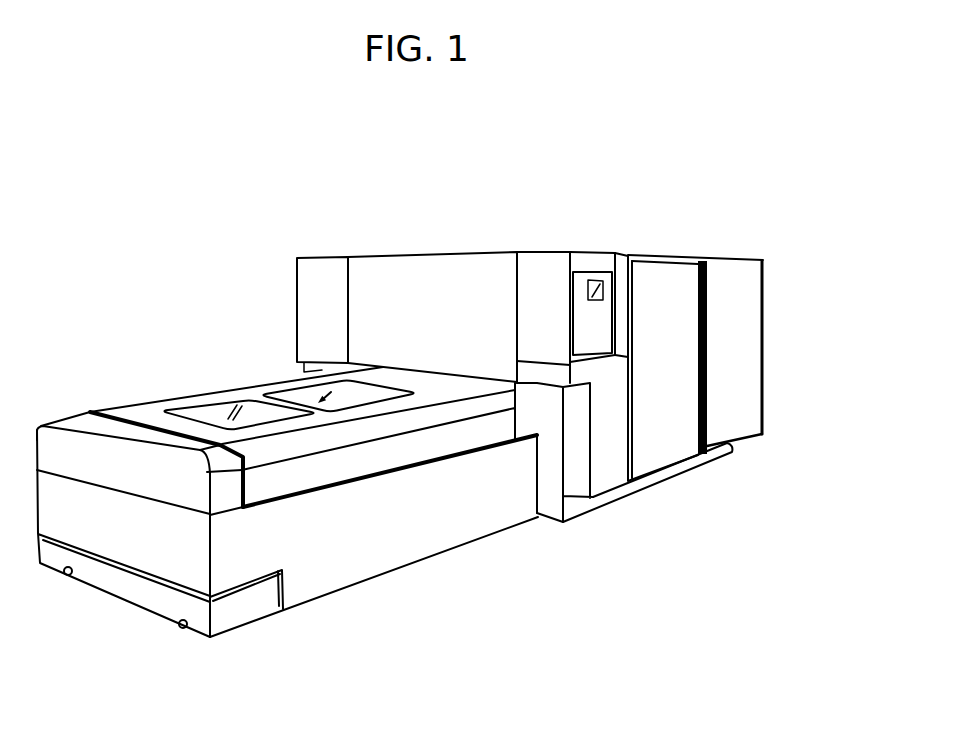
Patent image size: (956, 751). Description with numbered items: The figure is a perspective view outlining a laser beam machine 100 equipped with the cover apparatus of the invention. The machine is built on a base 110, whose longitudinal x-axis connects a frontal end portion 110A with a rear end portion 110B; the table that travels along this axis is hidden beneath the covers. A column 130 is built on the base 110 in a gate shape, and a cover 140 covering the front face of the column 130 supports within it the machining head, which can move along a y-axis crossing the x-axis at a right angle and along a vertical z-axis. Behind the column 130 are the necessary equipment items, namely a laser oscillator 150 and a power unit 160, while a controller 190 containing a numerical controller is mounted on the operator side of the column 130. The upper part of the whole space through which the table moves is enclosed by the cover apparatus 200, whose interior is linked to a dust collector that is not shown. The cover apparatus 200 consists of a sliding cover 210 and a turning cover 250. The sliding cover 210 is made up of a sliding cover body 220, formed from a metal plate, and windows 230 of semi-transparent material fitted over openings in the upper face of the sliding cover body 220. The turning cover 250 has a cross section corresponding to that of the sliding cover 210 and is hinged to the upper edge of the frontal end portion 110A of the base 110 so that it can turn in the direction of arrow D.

The laser beam machine 100 is at (750, 212).
The base 110 is at (420, 545).
The frontal end portion 110A is at (160, 562).
The rear end portion 110B is at (776, 354).
The column 130 is at (327, 278).
The cover 140 is at (418, 277).
The laser oscillator 150 is at (665, 277).
The power unit 160 is at (743, 297).
The controller 190 is at (582, 280).
The cover apparatus 200 is at (112, 318).
The sliding cover 210 is at (256, 388).
The sliding cover body 220 is at (155, 404).
The windows 230 is at (223, 420).
The turning cover 250 is at (53, 440).
The direction of arrow D is at (127, 438).